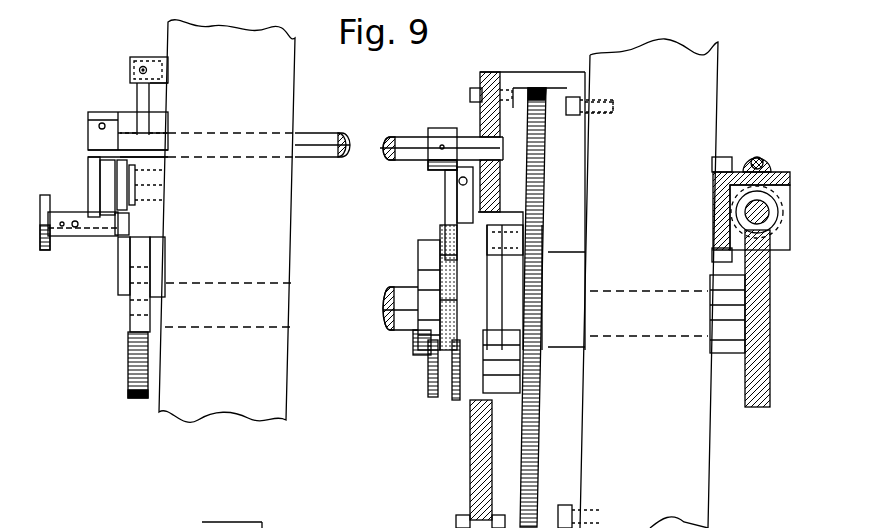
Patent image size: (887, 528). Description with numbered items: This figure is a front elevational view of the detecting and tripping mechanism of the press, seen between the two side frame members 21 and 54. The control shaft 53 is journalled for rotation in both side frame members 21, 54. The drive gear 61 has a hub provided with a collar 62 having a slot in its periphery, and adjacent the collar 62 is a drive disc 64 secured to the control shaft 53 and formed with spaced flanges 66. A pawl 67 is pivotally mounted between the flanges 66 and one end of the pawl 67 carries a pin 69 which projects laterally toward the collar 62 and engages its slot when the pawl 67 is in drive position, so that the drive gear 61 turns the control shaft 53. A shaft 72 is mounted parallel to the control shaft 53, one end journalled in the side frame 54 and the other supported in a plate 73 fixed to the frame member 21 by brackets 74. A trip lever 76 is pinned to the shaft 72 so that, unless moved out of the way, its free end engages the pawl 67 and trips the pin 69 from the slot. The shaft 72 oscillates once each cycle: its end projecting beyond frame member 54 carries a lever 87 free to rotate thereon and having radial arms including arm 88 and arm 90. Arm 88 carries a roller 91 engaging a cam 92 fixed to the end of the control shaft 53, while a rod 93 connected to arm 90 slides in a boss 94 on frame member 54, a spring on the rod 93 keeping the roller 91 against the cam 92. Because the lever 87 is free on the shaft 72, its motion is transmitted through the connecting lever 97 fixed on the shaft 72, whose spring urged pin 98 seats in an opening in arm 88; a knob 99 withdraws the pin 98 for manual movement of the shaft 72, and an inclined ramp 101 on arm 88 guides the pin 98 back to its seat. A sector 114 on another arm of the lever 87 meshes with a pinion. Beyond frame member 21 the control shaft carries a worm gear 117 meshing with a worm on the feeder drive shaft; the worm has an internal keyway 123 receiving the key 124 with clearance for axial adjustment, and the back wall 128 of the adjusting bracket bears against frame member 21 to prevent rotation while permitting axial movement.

The side frame member 21 is at (690, 494).
The control shaft 53 is at (388, 332).
The side frame member 54 is at (190, 396).
The drive gear 61 is at (546, 177).
The collar 62 is at (472, 410).
The drive disc 64 is at (424, 357).
The spaced flanges 66 is at (455, 402).
The pawl 67 is at (440, 248).
The pin 69 is at (494, 226).
The shaft 72 is at (338, 138).
The plate 73 is at (478, 113).
The brackets 74 is at (536, 72).
The trip lever 76 is at (440, 168).
The lever 87 is at (128, 122).
The arm 88 is at (120, 258).
The arm 90 is at (150, 108).
The roller 91 is at (130, 300).
The cam 92 is at (128, 378).
The rod 93 is at (143, 62).
The boss 94 is at (162, 58).
The connecting lever 97 is at (88, 172).
The spring urged pin 98 is at (118, 252).
The knob 99 is at (45, 250).
The inclined guide or ramp 101 is at (128, 226).
The sector 114 is at (133, 200).
The worm gear 117 is at (770, 318).
The internal keyway 123 is at (764, 213).
The pin or key 124 is at (770, 205).
The back wall 128 is at (718, 170).